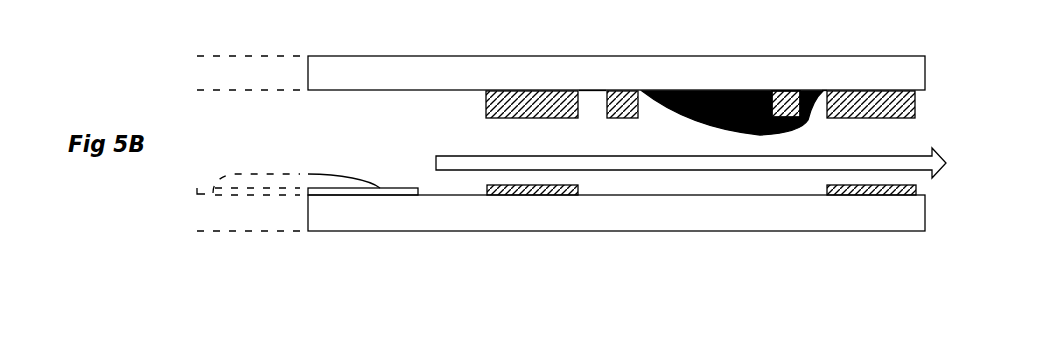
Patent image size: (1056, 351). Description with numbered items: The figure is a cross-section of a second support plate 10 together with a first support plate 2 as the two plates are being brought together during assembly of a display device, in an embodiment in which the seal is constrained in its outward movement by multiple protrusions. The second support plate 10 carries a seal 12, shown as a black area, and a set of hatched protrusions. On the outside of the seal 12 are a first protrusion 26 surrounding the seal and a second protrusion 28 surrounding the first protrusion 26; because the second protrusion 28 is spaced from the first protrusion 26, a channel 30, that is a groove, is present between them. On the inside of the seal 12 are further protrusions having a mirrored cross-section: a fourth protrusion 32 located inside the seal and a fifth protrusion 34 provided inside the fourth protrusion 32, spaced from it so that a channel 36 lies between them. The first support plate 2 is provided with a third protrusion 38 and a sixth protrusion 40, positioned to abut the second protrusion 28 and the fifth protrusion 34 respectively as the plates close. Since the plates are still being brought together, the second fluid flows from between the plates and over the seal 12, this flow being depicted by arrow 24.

The first support plate 2 is at (925, 213).
The second support plate 10 is at (925, 72).
The seal 12 is at (717, 90).
The arrow 24 is at (948, 163).
The first protrusion 26 is at (780, 90).
The second protrusion 28 is at (878, 90).
The channel 30 is at (810, 90).
The fourth protrusion 32 is at (622, 90).
The fifth protrusion 34 is at (532, 90).
The channel 36 is at (588, 90).
The third protrusion 38 is at (875, 197).
The sixth protrusion 40 is at (537, 196).